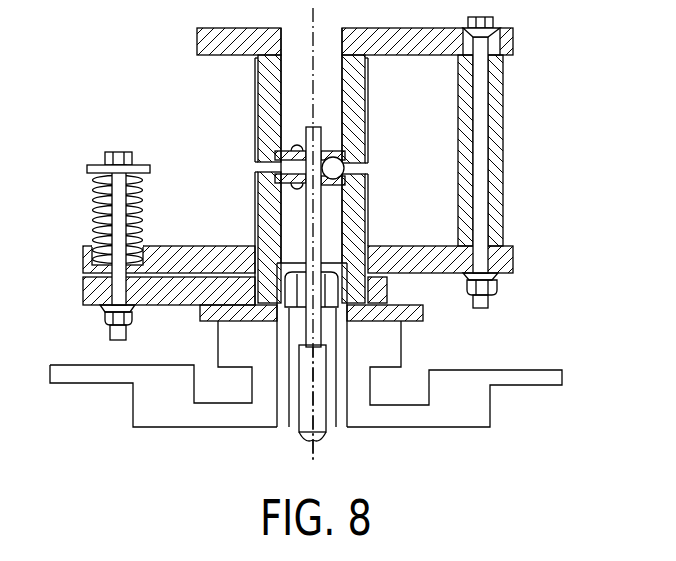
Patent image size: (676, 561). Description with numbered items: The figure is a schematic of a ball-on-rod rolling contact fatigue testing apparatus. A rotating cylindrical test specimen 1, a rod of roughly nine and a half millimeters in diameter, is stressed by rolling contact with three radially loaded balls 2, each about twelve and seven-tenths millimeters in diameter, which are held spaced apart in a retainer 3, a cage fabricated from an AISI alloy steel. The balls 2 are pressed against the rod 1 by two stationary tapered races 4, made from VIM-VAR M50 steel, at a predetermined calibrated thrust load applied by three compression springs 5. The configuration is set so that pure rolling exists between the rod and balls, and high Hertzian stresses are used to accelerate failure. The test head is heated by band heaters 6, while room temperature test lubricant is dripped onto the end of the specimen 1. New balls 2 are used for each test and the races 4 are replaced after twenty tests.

The cylindrical test specimen 1 is at (323, 216).
The radially loaded balls 2 is at (336, 167).
The retainer 3 is at (296, 150).
The stationary tapered races 4 is at (278, 156).
The compression springs 5 is at (87, 196).
The band heaters 6 is at (246, 183).